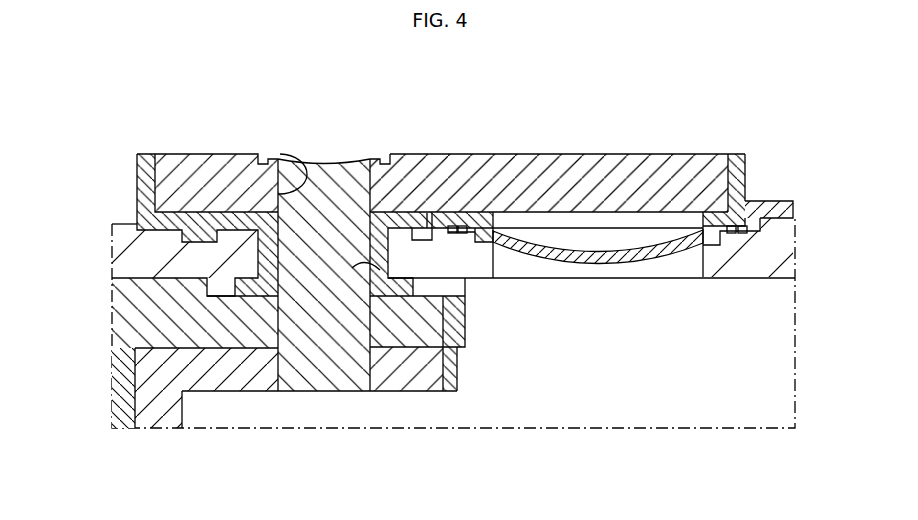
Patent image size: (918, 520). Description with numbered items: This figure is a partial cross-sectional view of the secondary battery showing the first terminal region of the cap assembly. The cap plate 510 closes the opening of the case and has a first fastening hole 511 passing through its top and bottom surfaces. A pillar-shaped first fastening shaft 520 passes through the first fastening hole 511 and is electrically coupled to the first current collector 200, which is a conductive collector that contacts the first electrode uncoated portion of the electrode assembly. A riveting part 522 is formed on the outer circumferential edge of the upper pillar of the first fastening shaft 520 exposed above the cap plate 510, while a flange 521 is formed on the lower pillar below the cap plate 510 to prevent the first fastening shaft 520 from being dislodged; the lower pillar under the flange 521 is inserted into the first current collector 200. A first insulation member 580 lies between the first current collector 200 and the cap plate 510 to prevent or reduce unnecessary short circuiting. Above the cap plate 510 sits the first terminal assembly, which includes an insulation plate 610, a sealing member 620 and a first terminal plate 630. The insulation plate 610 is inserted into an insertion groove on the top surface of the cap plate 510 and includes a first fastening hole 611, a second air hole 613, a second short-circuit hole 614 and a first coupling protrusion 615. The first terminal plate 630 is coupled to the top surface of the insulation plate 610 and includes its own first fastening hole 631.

The first current collector 200 is at (229, 373).
The cap plate 510 is at (768, 250).
The first fastening hole 511 is at (257, 158).
The first fastening shaft 520 is at (298, 358).
The flange 521 is at (408, 323).
The riveting part 522 is at (375, 157).
The first insulation member 580 is at (132, 317).
The insulation plate 610 is at (737, 168).
The first fastening hole 611 is at (372, 222).
The second air hole 613 is at (432, 228).
The second short-circuit hole 614 is at (493, 228).
The first coupling protrusion 615 is at (190, 165).
The sealing member 620 is at (733, 212).
The first terminal plate 630 is at (613, 168).
The first fastening hole 631 is at (310, 155).